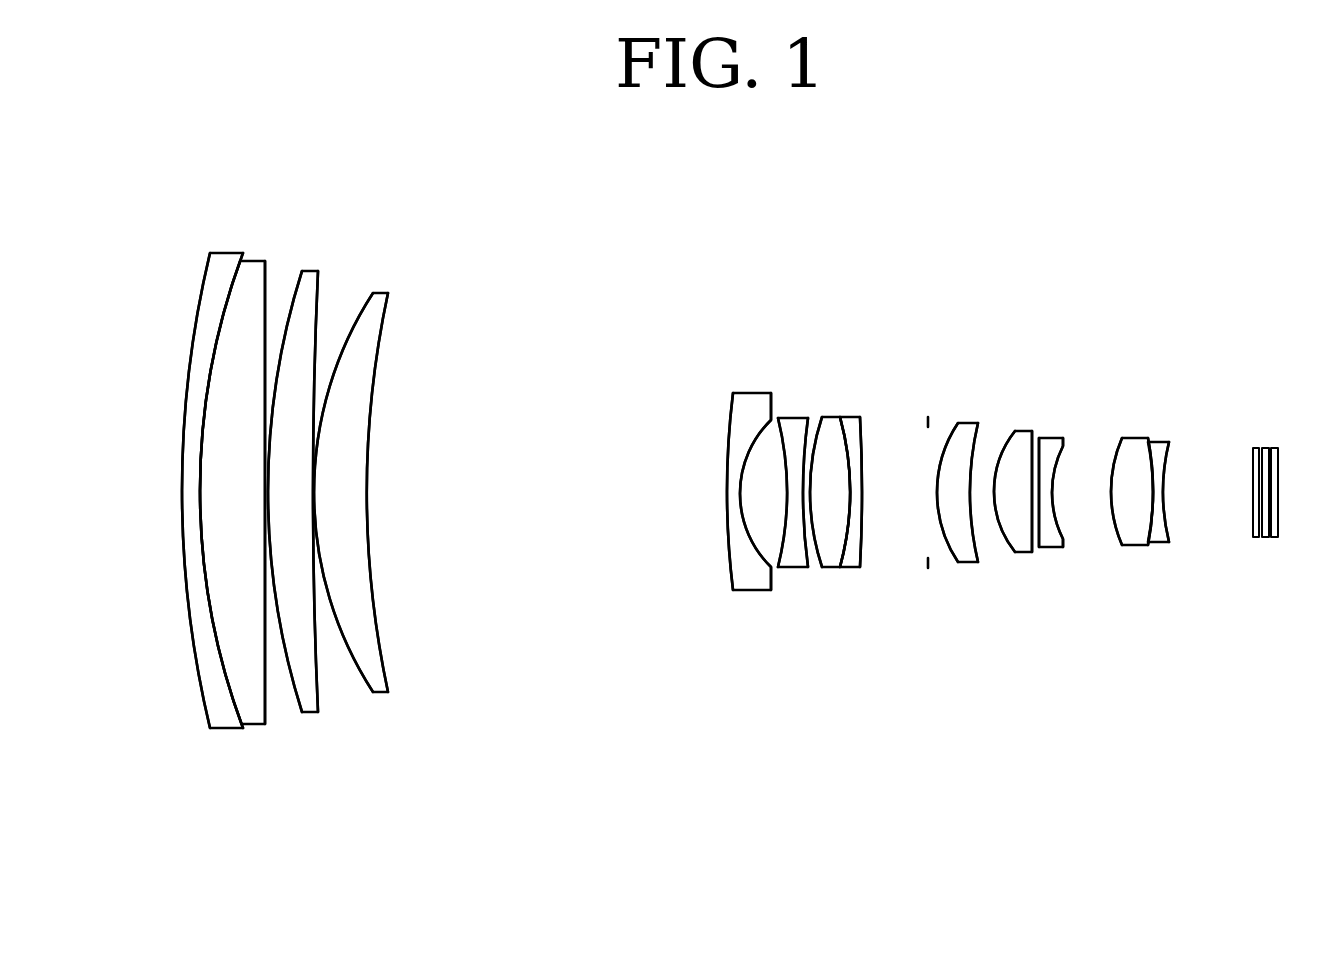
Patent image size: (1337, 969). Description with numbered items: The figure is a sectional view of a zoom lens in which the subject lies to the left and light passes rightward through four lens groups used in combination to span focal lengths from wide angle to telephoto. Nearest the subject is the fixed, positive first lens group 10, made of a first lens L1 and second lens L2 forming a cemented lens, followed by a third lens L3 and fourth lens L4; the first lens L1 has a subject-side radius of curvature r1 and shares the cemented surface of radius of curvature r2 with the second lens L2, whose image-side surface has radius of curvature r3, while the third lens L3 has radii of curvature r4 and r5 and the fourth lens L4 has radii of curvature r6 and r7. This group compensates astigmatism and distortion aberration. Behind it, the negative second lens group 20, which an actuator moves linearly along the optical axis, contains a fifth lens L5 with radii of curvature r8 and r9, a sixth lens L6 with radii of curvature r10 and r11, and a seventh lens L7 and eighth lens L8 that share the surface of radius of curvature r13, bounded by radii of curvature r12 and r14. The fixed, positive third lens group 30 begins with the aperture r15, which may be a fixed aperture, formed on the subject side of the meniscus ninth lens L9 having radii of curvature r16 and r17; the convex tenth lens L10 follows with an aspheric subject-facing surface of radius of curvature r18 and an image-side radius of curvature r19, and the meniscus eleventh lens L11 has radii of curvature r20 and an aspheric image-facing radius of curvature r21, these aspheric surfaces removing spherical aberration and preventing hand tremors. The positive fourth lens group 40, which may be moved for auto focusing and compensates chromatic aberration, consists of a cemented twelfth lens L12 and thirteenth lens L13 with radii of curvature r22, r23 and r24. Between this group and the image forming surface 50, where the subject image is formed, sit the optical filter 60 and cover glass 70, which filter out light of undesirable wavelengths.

The first lens group 10 is at (293, 523).
The second lens group 20 is at (812, 509).
The third lens group 30 is at (1009, 505).
The fourth lens group 40 is at (1146, 514).
The image forming surface 50 is at (1275, 537).
The optical filter 60 is at (1266, 448).
The cover glass 70 is at (1257, 537).
The first lens L1 is at (225, 728).
The second lens L2 is at (253, 724).
The third lens L3 is at (310, 712).
The fourth lens L4 is at (380, 692).
The fifth lens L5 is at (752, 590).
The sixth lens L6 is at (792, 567).
The seventh lens L7 is at (833, 567).
The eighth lens L8 is at (848, 567).
The ninth lens L9 is at (968, 562).
The tenth lens L10 is at (1022, 552).
The eleventh lens L11 is at (1050, 547).
The twelfth lens L12 is at (1135, 545).
The thirteenth lens L13 is at (1158, 542).
The radius of curvature r1 is at (199, 307).
The radius of curvature r2 is at (230, 292).
The radius of curvature r3 is at (265, 290).
The radius of curvature r4 is at (296, 290).
The radius of curvature r5 is at (318, 297).
The radius of curvature r6 is at (362, 310).
The radius of curvature r7 is at (383, 318).
The radius of curvature r8 is at (731, 407).
The radius of curvature r9 is at (772, 424).
The radius of curvature r10 is at (781, 425).
The radius of curvature r11 is at (806, 435).
The radius of curvature r12 is at (821, 425).
The radius of curvature r13 is at (843, 421).
The radius of curvature r14 is at (861, 440).
The aperture r15 is at (927, 417).
The radius of curvature r16 is at (948, 440).
The radius of curvature r17 is at (977, 440).
The radius of curvature r18 is at (1005, 445).
The radius of curvature r19 is at (1032, 440).
The radius of curvature r20 is at (1040, 445).
The radius of curvature r21 is at (1061, 455).
The radius of curvature r22 is at (1118, 450).
The radius of curvature r23 is at (1150, 450).
The radius of curvature r24 is at (1166, 455).